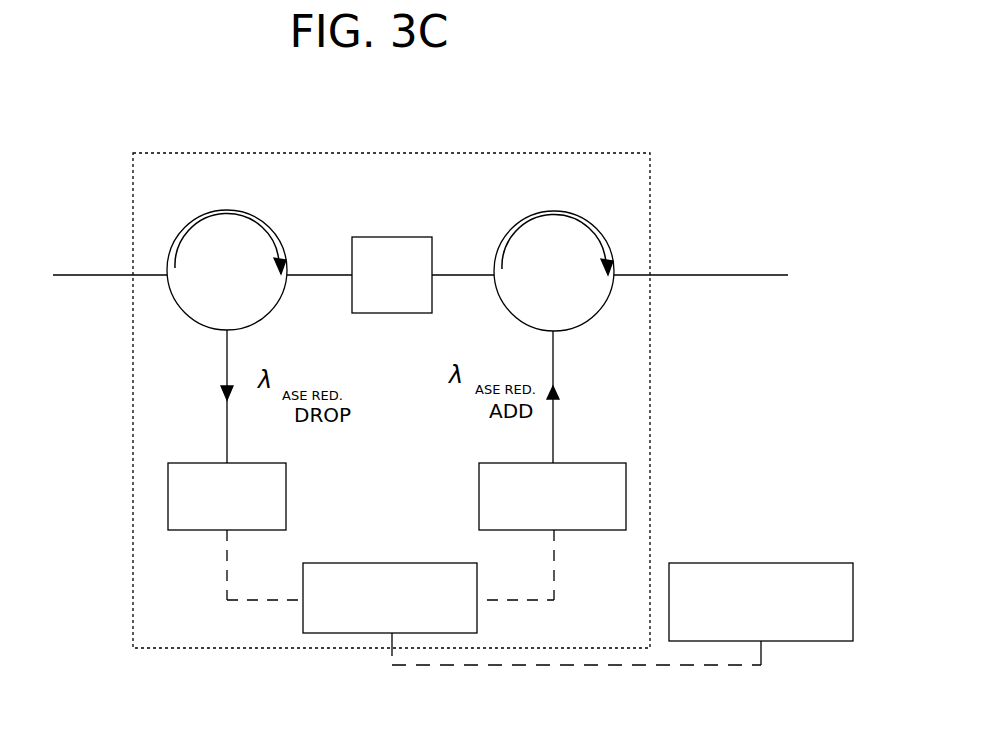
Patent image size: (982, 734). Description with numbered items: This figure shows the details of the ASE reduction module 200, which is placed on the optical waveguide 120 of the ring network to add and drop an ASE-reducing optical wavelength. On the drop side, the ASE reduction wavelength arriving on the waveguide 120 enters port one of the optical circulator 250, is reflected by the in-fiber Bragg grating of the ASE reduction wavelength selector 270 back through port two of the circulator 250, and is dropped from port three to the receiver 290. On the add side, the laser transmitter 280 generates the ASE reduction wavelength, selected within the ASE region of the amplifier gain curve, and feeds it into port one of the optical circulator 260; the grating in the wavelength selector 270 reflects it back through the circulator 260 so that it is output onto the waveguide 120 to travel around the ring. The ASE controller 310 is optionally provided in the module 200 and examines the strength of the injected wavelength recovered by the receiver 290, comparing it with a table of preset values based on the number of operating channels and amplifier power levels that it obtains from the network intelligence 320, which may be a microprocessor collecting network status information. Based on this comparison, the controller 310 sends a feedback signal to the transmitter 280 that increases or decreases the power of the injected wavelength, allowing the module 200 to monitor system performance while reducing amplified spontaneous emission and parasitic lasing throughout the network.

The optical waveguide 120 is at (98, 275).
The ASE reduction module 200 is at (480, 128).
The optical circulator 250 is at (250, 211).
The optical circulator 260 is at (582, 212).
The ASE reduction wavelength selector 270 is at (407, 236).
The laser transmitter 280 is at (597, 532).
The receiver 290 is at (178, 532).
The ASE controller 310 is at (402, 563).
The network intelligence 320 is at (800, 562).